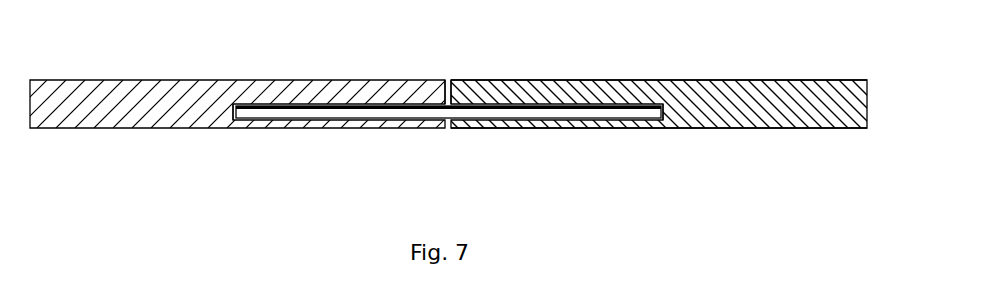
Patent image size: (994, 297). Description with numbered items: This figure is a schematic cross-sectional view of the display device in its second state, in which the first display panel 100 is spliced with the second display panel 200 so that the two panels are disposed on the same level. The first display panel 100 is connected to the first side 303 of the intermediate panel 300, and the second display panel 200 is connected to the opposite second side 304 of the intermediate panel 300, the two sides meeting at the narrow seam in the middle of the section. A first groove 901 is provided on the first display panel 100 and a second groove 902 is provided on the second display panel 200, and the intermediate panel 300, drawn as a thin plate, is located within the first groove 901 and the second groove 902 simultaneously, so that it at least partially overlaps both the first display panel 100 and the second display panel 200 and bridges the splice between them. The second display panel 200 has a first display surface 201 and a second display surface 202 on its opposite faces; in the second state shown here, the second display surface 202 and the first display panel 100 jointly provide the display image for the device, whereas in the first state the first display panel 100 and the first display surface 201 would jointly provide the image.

The first display panel 100 is at (147, 92).
The second display panel 200 is at (737, 92).
The first display surface 201 is at (732, 123).
The second display surface 202 is at (599, 80).
The intermediate panel 300 is at (448, 113).
The first side 303 is at (446, 91).
The second side 304 is at (451, 91).
The first groove 901 is at (240, 122).
The second groove 902 is at (663, 120).